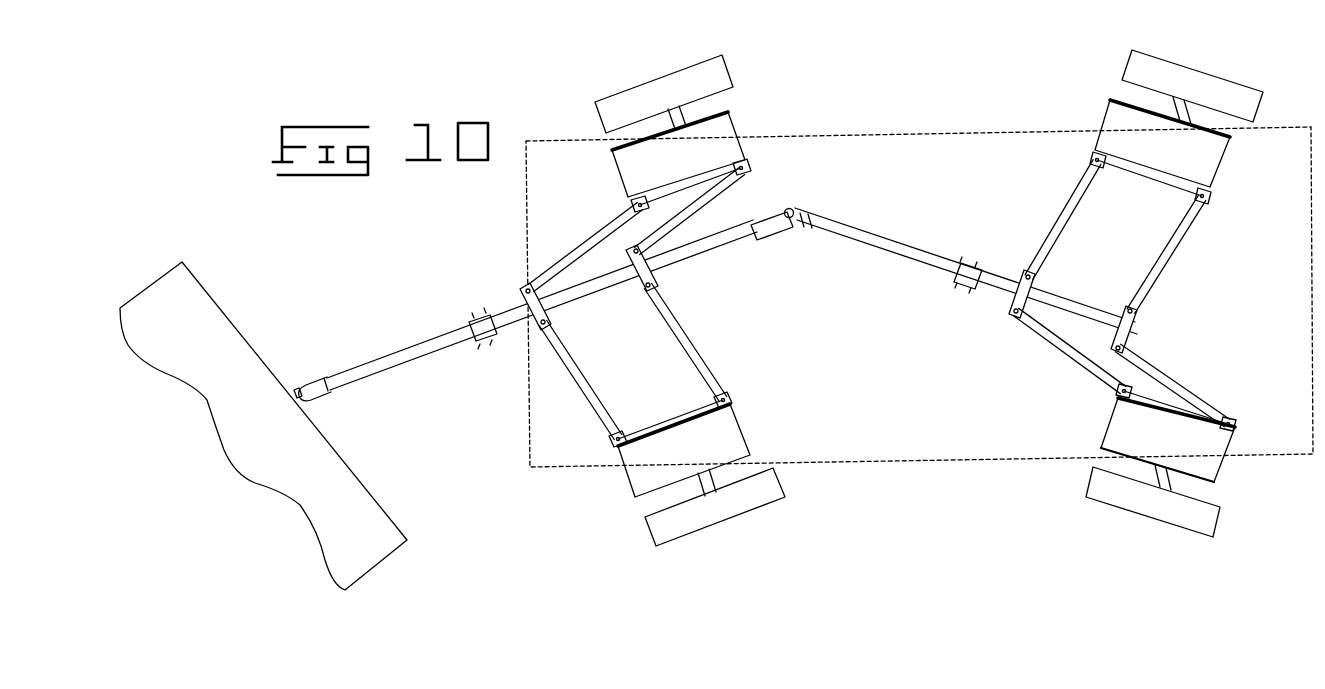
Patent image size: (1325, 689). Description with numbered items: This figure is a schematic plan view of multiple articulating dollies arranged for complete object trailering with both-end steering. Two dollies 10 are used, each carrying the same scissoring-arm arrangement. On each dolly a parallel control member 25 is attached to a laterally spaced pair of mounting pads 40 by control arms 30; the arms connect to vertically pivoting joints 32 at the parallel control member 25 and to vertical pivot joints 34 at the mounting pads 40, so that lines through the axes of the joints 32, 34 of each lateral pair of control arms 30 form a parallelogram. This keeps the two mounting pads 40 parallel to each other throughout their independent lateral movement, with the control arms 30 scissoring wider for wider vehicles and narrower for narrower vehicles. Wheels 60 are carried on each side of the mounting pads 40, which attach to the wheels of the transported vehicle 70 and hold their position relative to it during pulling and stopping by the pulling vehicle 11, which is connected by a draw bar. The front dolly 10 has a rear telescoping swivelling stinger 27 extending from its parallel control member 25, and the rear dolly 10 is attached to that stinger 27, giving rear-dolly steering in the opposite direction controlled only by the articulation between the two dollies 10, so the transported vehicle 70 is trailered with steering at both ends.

The dolly 10 is at (499, 257).
The pulling vehicle 11 is at (340, 460).
The parallel control member 25 is at (535, 281).
The rear telescoping swivelling stinger 27 is at (775, 226).
The control arms 30 is at (573, 377).
The vertically pivoting joints 32 is at (540, 316).
The vertical pivot joints 34 is at (730, 186).
The mounting pads 40 is at (713, 128).
The wheels 60 is at (720, 73).
The transported vehicle 70 is at (527, 417).